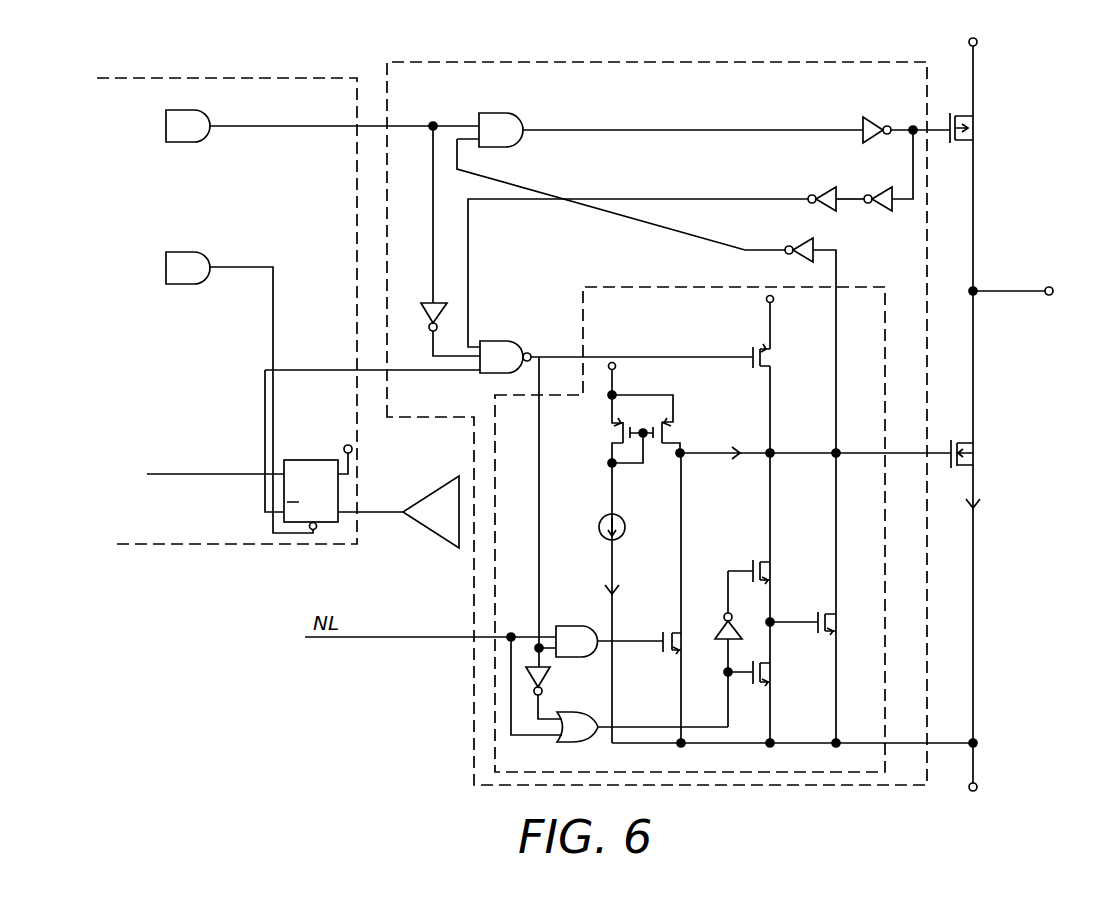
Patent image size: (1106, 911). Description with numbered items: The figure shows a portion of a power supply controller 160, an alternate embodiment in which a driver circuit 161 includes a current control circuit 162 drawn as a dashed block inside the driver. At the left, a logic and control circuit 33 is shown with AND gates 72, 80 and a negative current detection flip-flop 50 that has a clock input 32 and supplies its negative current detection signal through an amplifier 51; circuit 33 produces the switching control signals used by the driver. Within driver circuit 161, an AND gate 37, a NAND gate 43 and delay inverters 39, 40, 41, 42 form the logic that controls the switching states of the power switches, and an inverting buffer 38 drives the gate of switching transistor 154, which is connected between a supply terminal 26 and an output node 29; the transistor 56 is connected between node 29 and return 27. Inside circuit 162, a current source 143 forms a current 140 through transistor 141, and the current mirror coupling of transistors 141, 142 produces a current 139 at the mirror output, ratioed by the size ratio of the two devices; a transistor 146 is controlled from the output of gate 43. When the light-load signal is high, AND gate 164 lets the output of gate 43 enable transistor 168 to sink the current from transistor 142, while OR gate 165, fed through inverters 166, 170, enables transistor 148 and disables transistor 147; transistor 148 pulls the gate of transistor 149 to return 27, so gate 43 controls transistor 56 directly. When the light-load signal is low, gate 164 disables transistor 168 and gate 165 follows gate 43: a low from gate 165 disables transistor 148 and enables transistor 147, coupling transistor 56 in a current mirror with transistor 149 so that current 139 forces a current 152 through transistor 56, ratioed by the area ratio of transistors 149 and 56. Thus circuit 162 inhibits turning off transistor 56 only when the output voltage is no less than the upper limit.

The input voltage terminal 26 is at (977, 40).
The return 27 is at (977, 785).
The output node 29 is at (1051, 287).
The clock input 32 is at (344, 449).
The logic and control circuit 33 is at (177, 548).
The AND gate 37 is at (500, 113).
The inverting buffer 38 is at (878, 118).
The delay inverter 39 is at (825, 188).
The delay inverter 40 is at (884, 188).
The delay inverter 41 is at (803, 240).
The delay inverter 42 is at (424, 316).
The NAND gate 43 is at (500, 341).
The negative current detection flip-flop 50 is at (343, 518).
The comparator 51 is at (435, 534).
The transistor 56 is at (964, 455).
The AND gate 72 is at (180, 144).
The AND gate 80 is at (180, 286).
The current 139 is at (743, 463).
The current 140 is at (619, 596).
The transistor 141 is at (610, 433).
The transistor 142 is at (672, 432).
The current source 143 is at (626, 534).
The transistor 146 is at (772, 352).
The transistor 147 is at (768, 568).
The transistor 148 is at (768, 675).
The transistor 149 is at (832, 620).
The current 152 is at (977, 511).
The switching transistor 154 is at (975, 133).
The power supply controller 160 is at (330, 774).
The driver circuit 161 is at (473, 732).
The current control circuit 162 is at (601, 286).
The AND gate 164 is at (590, 626).
The OR gate 165 is at (568, 742).
The inverter 166 is at (547, 681).
The transistor 168 is at (688, 638).
The inverter 170 is at (755, 612).